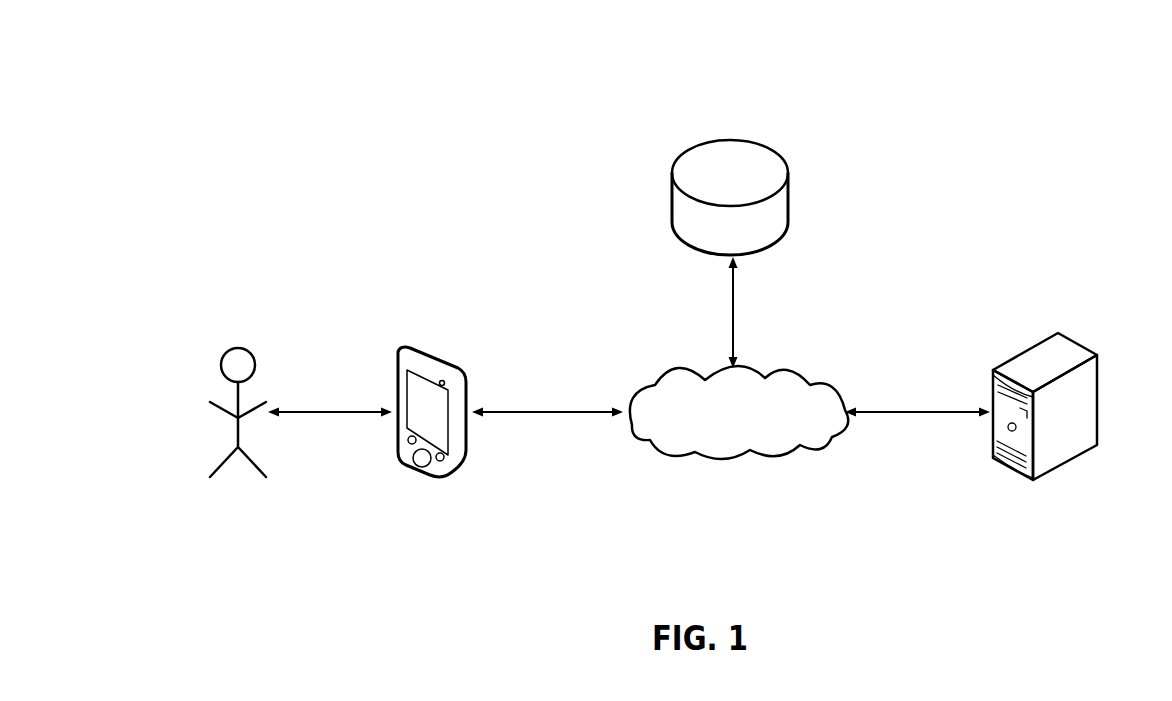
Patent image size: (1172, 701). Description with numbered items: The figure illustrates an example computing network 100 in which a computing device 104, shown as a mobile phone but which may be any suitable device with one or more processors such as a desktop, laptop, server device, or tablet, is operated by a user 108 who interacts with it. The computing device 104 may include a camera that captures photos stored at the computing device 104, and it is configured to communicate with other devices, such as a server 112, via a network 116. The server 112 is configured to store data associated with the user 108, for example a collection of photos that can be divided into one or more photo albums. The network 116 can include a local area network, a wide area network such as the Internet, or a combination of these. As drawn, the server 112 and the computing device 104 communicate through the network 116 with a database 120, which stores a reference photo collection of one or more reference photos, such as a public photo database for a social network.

The computing network 100 is at (236, 50).
The computing device 104 is at (433, 480).
The user 108 is at (197, 349).
The server 112 is at (1098, 405).
The network 116 is at (735, 457).
The database 120 is at (733, 140).